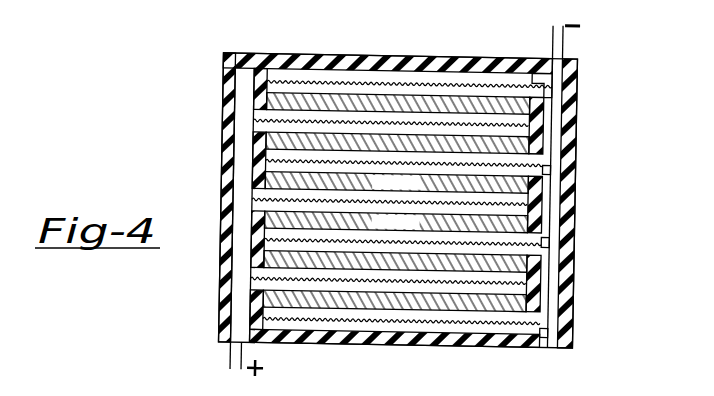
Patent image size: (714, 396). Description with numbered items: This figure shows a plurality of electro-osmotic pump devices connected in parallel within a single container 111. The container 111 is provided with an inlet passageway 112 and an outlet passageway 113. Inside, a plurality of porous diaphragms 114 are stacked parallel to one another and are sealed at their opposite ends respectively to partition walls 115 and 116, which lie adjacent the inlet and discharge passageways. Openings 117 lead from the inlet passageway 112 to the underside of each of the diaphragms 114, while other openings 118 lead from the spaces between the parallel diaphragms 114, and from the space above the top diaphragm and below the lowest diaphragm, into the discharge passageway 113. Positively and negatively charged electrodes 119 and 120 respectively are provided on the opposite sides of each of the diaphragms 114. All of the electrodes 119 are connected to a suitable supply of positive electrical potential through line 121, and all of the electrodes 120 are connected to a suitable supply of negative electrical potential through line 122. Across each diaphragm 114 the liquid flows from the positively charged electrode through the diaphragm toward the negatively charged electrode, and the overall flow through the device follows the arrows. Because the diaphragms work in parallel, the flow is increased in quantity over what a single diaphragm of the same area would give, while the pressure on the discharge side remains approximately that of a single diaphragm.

The container 111 is at (270, 58).
The inlet passageway 112 is at (244, 348).
The outlet passageway 113 is at (548, 53).
The porous diaphragms 114 is at (403, 357).
The partition wall 115 is at (256, 92).
The partition wall 116 is at (568, 97).
The openings 117 is at (249, 128).
The openings 118 is at (558, 59).
The positively charged electrodes 119 is at (252, 123).
The negatively charged electrodes 120 is at (576, 66).
The line 121 is at (235, 363).
The line 122 is at (554, 25).